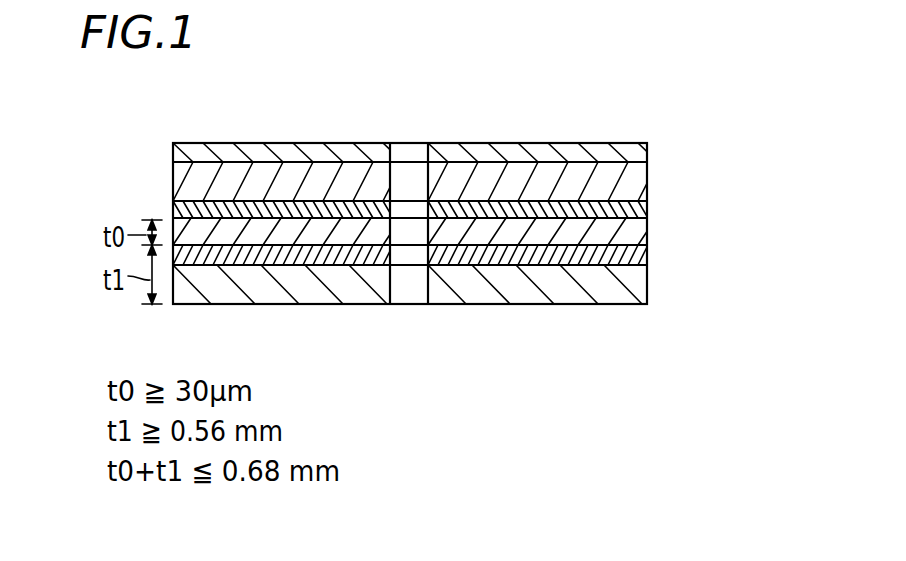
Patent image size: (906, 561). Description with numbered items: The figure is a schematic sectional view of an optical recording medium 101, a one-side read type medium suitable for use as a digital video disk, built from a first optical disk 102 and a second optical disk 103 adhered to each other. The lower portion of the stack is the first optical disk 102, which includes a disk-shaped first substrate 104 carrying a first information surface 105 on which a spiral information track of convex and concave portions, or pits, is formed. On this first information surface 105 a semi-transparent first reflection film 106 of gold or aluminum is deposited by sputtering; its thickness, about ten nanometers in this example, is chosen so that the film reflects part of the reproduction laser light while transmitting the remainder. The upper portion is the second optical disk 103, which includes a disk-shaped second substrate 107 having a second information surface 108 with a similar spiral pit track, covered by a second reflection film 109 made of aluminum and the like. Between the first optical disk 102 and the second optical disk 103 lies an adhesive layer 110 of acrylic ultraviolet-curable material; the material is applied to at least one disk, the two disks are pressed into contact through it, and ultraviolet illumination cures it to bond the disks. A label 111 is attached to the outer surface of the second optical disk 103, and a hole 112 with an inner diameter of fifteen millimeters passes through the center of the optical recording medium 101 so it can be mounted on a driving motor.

The optical recording medium 101 is at (562, 142).
The first optical disk 102 is at (496, 317).
The second optical disk 103 is at (496, 142).
The first substrate 104 is at (650, 287).
The first information surface 105 is at (547, 268).
The first reflection film 106 is at (650, 255).
The second substrate 107 is at (650, 172).
The second information surface 108 is at (273, 195).
The second reflection film 109 is at (650, 208).
The adhesive layer 110 is at (650, 231).
The label 111 is at (650, 146).
The hole 112 is at (410, 305).